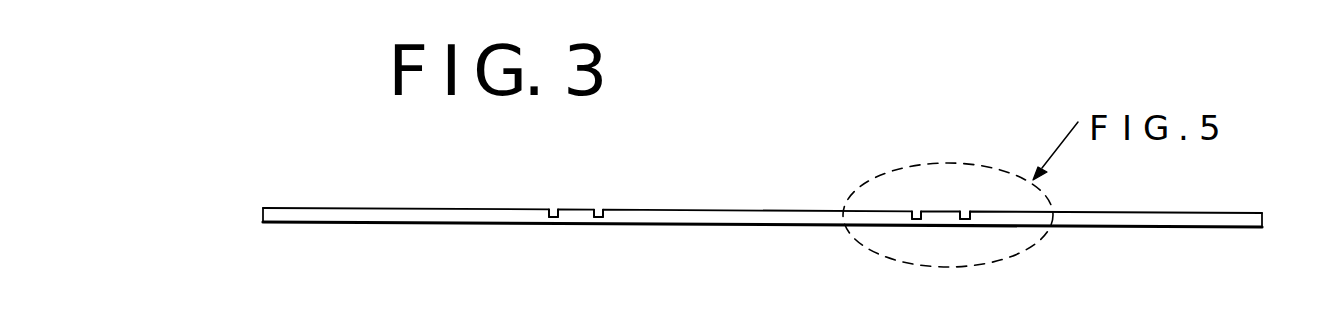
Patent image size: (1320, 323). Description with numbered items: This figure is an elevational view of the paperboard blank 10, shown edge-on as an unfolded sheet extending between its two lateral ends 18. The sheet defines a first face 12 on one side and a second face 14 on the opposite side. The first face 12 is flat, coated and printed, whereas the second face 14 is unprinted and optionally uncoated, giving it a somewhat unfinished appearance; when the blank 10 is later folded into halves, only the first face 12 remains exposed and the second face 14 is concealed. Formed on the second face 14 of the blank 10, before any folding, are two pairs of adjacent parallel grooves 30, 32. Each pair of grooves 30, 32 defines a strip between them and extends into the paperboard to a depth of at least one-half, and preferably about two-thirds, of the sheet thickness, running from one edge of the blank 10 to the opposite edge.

The blank 10 is at (728, 197).
The first face 12 is at (328, 225).
The second face 14 is at (323, 208).
The lateral ends 18 is at (263, 212).
The pair of adjacent parallel grooves 30 is at (598, 211).
The pair of adjacent parallel grooves 32 is at (965, 212).